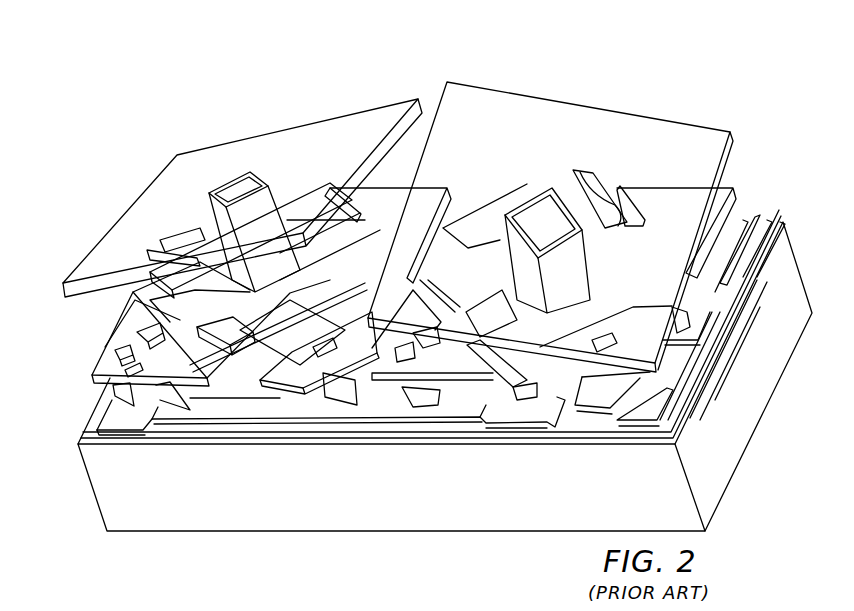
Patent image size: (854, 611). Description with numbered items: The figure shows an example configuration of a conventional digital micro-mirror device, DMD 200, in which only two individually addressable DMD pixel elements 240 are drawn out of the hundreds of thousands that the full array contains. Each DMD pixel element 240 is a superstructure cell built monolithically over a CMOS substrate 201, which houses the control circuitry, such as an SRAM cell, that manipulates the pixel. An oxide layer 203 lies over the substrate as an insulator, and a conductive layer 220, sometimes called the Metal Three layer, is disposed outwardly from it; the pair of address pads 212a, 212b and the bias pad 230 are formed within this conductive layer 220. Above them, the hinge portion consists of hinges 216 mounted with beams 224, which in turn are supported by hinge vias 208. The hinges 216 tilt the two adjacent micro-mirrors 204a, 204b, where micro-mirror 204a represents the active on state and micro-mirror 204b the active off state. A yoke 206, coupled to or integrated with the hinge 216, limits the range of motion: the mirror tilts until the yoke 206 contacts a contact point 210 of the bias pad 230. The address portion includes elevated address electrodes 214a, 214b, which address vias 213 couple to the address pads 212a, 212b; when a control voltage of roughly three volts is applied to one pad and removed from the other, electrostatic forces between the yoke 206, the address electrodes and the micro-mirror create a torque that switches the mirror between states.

The DMD pixel element 200 is at (126, 79).
The CMOS substrate 201 is at (743, 426).
The oxide layer 203 is at (132, 437).
The micro-mirror 204a is at (598, 122).
The micro-mirror 204b is at (100, 252).
The yoke 206 is at (105, 347).
The hinge via 208 is at (118, 393).
The contact point 210 is at (547, 410).
The address pad 212a is at (318, 397).
The address pad 212b is at (188, 280).
The address via 213 is at (345, 382).
The address electrode 214a is at (298, 370).
The address electrode 214b is at (165, 245).
The hinge 216 is at (477, 323).
The conductive layer 220 is at (755, 217).
The beam 224 is at (105, 355).
The bias pad 230 is at (187, 403).
The DMD pixel element 240 is at (260, 114).